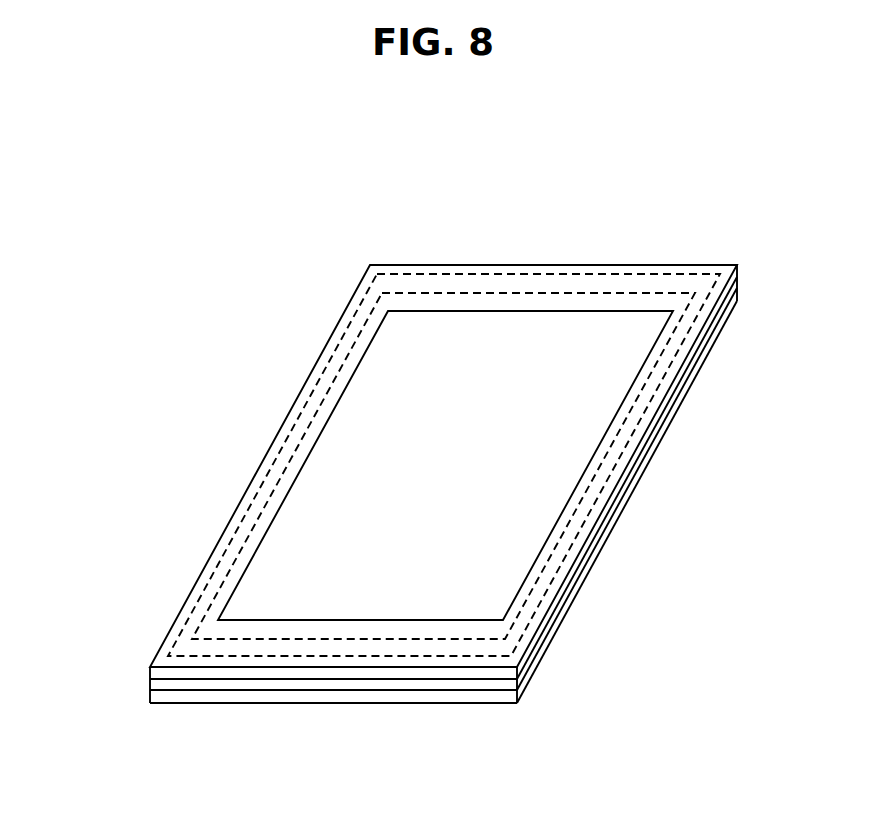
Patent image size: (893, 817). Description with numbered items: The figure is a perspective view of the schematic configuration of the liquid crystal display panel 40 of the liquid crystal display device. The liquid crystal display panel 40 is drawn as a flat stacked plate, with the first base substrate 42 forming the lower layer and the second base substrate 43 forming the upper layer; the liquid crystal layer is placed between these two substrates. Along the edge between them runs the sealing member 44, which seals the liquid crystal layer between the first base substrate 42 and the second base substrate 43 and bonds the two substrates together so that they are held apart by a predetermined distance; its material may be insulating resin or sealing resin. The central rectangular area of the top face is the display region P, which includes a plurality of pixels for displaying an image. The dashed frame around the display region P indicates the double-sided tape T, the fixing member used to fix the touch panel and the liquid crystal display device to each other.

The liquid crystal display panel 40 is at (413, 458).
The double-sided tape T is at (322, 352).
The display region P is at (533, 462).
The first base substrate 42 is at (168, 700).
The second base substrate 43 is at (168, 675).
The sealing member 44 is at (507, 687).